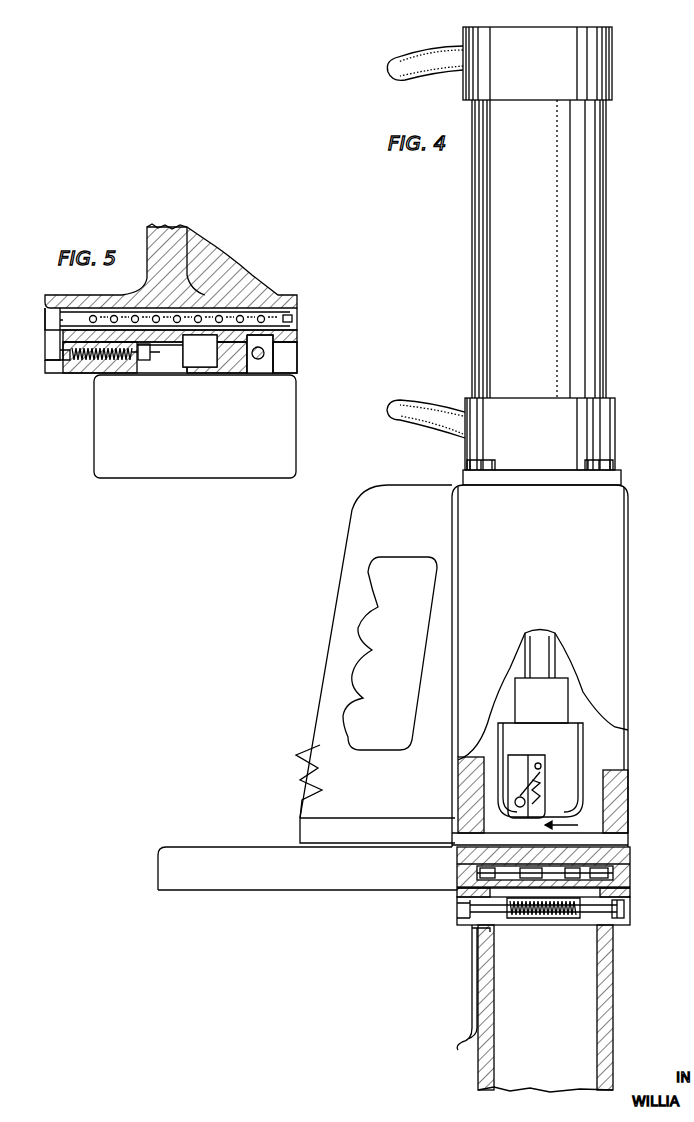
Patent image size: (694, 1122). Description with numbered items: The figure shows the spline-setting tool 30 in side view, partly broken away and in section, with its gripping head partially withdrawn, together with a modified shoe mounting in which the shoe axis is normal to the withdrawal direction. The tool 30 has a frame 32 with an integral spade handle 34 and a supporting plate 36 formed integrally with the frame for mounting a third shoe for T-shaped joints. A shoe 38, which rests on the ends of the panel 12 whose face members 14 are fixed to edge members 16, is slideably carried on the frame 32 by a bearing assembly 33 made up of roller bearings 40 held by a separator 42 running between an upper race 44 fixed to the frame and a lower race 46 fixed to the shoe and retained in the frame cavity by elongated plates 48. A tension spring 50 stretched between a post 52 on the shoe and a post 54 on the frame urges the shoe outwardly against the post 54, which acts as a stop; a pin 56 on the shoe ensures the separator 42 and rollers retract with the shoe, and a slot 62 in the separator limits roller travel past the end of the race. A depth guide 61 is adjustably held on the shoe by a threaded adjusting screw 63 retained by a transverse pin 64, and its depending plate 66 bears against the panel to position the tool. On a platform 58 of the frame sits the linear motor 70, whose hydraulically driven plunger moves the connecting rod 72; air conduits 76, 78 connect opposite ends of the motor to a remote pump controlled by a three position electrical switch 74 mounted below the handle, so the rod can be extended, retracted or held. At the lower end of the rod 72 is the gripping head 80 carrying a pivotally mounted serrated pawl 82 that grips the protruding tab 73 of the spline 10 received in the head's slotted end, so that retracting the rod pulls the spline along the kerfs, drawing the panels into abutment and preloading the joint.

In FIG. 4, the spline 10 is at (573, 827).
In FIG. 4, the panel 12 is at (614, 1022).
In FIG. 4, the face member 14 is at (486, 1090).
In FIG. 4, the edge member 16 is at (558, 1081).
In FIG. 4, the tool 30 is at (628, 470).
In FIG. 4, the frame 32 is at (547, 569).
In FIG. 4, the bearing assembly 33 is at (515, 862).
In FIG. 5, the bearing assembly 33 is at (113, 310).
In FIG. 4, the spade handle 34 is at (350, 604).
In FIG. 4, the supporting plate 36 is at (185, 884).
In FIG. 4, the shoe 38 is at (458, 916).
In FIG. 5, the shoe 38 is at (298, 354).
In FIG. 4, the roller bearing 40 is at (588, 870).
In FIG. 5, the roller bearing 40 is at (221, 312).
In FIG. 4, the separator 42 is at (477, 868).
In FIG. 5, the separator 42 is at (234, 312).
In FIG. 4, the upper race 44 is at (613, 866).
In FIG. 5, the upper race 44 is at (297, 303).
In FIG. 4, the lower race 46 is at (605, 884).
In FIG. 5, the lower race 46 is at (171, 351).
In FIG. 4, the elongated plate 48 is at (460, 894).
In FIG. 5, the tension spring 50 is at (77, 364).
In FIG. 5, the post 52 is at (147, 362).
In FIG. 5, the post 54 is at (55, 323).
In FIG. 5, the pin 56 is at (292, 323).
In FIG. 4, the platform 58 is at (533, 478).
In FIG. 4, the depth guide 61 is at (470, 1000).
In FIG. 5, the depth guide 61 is at (214, 441).
In FIG. 4, the slot 62 is at (548, 868).
In FIG. 4, the adjusting screw 63 is at (570, 912).
In FIG. 5, the adjusting screw 63 is at (258, 362).
In FIG. 4, the transverse pin 64 is at (620, 910).
In FIG. 4, the depending plate 66 is at (472, 962).
In FIG. 4, the linear motor 70 is at (551, 317).
In FIG. 4, the connecting rod 72 is at (540, 657).
In FIG. 4, the protruding tab 73 is at (541, 766).
In FIG. 4, the three position electrical switch 74 is at (300, 770).
In FIG. 4, the air conduit 76 is at (432, 402).
In FIG. 4, the air conduit 78 is at (412, 50).
In FIG. 4, the gripping head 80 is at (552, 748).
In FIG. 4, the serrated pawl 82 is at (526, 786).